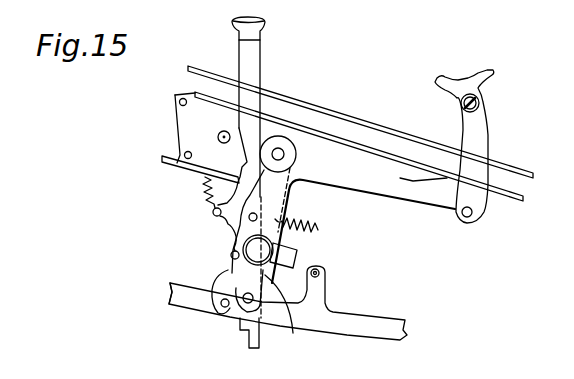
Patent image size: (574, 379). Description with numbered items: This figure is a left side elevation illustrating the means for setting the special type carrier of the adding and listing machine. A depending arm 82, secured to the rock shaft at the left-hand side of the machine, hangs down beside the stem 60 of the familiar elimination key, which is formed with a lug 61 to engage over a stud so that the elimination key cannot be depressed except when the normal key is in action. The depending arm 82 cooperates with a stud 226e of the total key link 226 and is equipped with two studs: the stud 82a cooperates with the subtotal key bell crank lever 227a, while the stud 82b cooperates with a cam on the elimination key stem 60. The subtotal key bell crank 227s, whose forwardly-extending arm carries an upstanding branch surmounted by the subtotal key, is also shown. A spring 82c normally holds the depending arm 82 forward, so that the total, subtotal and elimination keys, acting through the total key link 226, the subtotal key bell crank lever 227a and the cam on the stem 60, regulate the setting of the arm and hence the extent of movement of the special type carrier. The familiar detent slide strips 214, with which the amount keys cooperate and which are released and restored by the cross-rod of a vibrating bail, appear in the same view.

The stem of the elimination key 60 is at (261, 74).
The lug 61 is at (233, 328).
The detent slide strips 214 is at (187, 174).
The depending arm 82 is at (227, 268).
The stud 82a is at (258, 217).
The stud 82b is at (233, 252).
The spring 82c is at (318, 230).
The total key link 226 is at (358, 315).
The stud of the total key link 226e is at (180, 307).
The subtotal key bell crank 227s is at (400, 177).
The subtotal key bell crank lever 227a is at (360, 267).